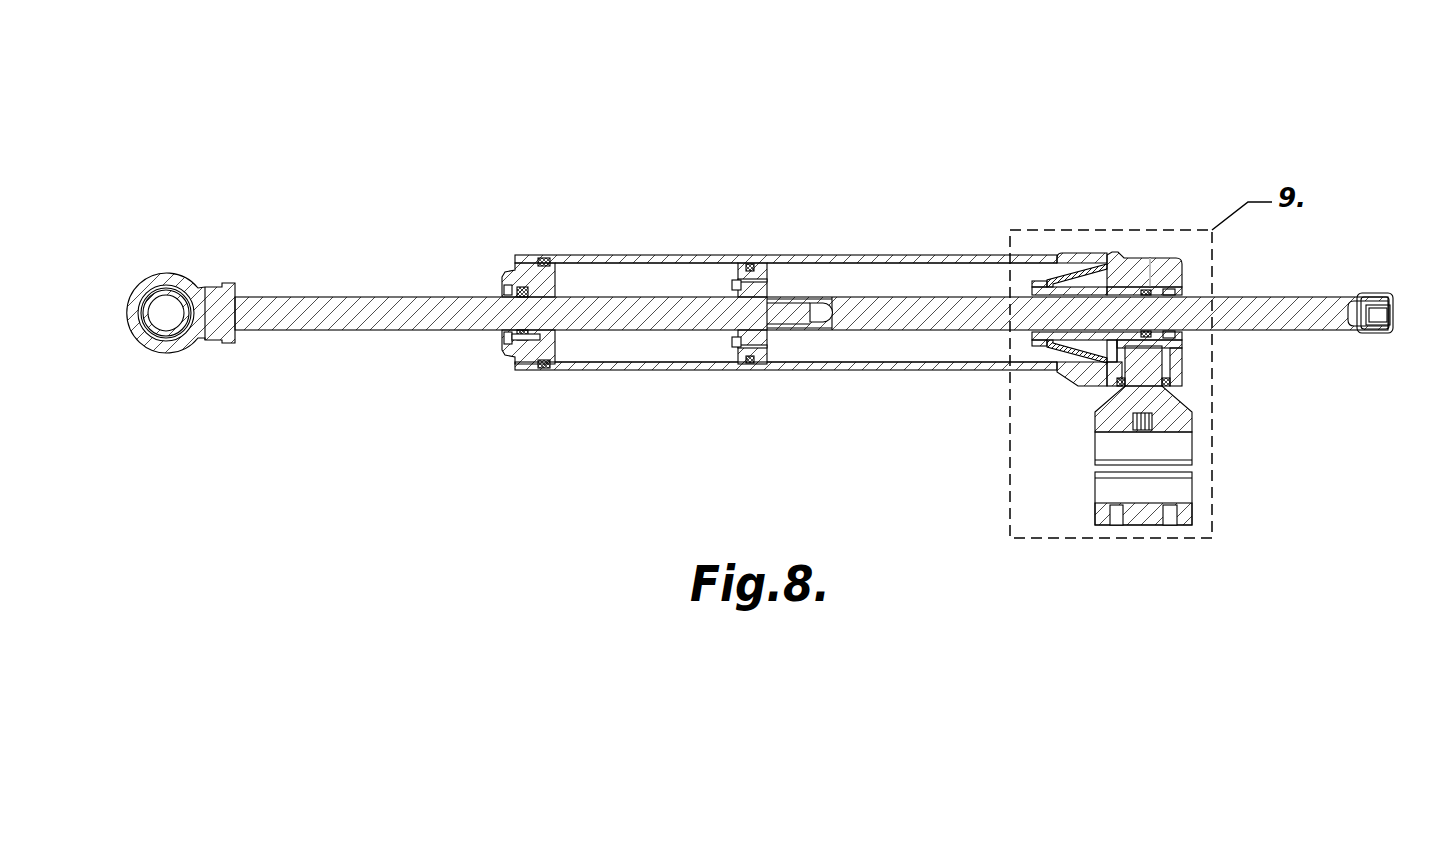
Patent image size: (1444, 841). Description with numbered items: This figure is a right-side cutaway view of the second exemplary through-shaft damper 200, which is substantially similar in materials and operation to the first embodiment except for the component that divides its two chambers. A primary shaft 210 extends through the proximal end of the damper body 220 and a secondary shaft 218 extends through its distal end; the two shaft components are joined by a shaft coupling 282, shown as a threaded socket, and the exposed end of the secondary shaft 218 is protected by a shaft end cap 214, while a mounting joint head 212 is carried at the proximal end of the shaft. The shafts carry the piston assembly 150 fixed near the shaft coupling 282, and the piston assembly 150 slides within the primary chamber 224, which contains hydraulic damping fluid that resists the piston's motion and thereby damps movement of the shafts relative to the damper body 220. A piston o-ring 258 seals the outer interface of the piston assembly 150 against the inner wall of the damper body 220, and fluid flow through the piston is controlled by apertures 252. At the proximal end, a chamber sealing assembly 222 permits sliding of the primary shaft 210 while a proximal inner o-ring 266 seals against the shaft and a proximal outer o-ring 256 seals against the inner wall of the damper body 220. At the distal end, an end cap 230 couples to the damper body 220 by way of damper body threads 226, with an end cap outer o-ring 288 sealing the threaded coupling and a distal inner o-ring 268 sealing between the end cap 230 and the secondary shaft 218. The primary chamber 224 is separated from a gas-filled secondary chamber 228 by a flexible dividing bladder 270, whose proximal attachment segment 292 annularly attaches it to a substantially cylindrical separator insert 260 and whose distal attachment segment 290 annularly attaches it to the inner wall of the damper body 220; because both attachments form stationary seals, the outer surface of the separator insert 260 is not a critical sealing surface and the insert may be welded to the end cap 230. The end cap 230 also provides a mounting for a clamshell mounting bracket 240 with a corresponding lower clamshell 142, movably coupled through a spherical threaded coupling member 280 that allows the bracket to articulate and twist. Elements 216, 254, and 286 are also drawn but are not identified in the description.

The through-shaft damper 200 is at (918, 100).
The primary shaft 210 is at (382, 297).
The mounting joint head 212 is at (180, 276).
The shaft end cap 214 is at (1372, 295).
The spherical bearing 216 is at (150, 296).
The secondary shaft 218 is at (948, 292).
The damper body 220 is at (905, 256).
The chamber sealing assembly 222 is at (499, 273).
The primary chamber 224 is at (660, 290).
The damper body threads 226 is at (1087, 262).
The secondary chamber 228 is at (1100, 278).
The end cap 230 is at (1184, 273).
The clamshell mounting bracket 240 is at (1195, 425).
The lower clamshell 142 is at (1195, 488).
The piston assembly 150 is at (757, 265).
The apertures 252 is at (755, 345).
The rod wiper 254 is at (503, 340).
The proximal outer o-ring 256 is at (545, 366).
The piston o-ring 258 is at (742, 365).
The separator insert 260 is at (1036, 285).
The proximal inner o-ring 266 is at (522, 289).
The distal inner o-ring 268 is at (1150, 340).
The flexible dividing bladder 270 is at (1072, 272).
The threaded coupling member 280 is at (1147, 386).
The shaft coupling 282 is at (818, 306).
The body wall 286 is at (1116, 345).
The end cap outer o-ring 288 is at (1062, 372).
The distal attachment segment 290 is at (1112, 272).
The proximal attachment segment 292 is at (1048, 280).